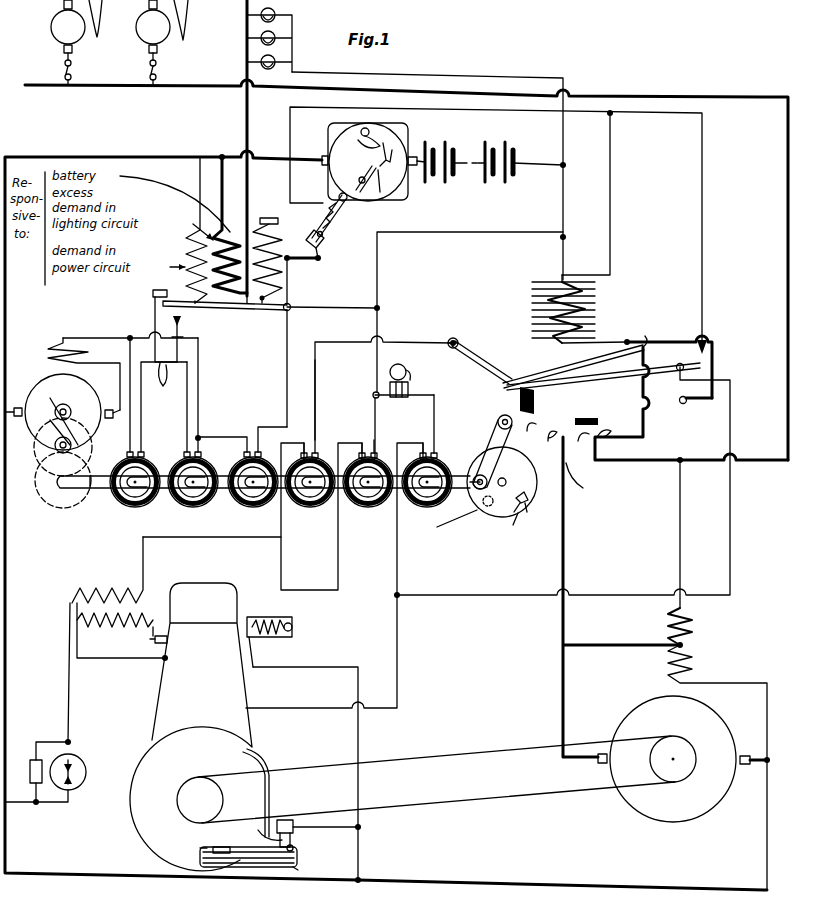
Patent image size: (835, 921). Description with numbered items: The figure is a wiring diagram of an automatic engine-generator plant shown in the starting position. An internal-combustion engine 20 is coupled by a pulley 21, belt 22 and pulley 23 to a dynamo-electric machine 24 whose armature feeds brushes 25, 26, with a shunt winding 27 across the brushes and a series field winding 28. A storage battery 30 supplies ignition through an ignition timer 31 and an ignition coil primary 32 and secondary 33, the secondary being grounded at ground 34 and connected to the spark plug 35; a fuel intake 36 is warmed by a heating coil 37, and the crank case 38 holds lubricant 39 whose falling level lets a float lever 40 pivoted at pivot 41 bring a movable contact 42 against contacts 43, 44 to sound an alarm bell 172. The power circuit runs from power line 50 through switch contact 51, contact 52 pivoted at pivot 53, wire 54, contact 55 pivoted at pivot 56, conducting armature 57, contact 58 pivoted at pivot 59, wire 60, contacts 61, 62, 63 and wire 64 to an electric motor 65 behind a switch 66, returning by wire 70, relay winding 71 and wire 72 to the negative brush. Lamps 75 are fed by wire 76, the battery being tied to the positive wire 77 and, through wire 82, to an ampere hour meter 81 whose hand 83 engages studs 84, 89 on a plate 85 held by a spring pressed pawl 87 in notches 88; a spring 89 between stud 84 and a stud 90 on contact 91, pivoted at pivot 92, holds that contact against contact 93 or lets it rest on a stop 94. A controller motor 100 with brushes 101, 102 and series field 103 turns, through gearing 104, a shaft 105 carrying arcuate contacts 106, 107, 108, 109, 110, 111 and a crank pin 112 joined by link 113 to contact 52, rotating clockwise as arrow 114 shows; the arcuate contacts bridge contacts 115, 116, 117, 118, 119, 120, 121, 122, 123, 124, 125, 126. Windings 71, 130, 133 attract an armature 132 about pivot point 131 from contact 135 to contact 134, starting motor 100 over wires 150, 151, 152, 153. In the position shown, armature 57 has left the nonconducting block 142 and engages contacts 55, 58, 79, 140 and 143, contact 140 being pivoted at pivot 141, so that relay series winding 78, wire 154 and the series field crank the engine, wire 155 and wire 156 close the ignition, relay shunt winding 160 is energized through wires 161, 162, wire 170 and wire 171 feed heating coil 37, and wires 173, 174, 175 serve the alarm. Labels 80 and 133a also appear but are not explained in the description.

The internal-combustion engine 20 is at (152, 735).
The pulley 21 is at (185, 783).
The belt 22 is at (444, 756).
The pulley 23 is at (680, 745).
The dynamo-electric machine 24 is at (652, 808).
The brush 25 is at (603, 753).
The brush 26 is at (745, 754).
The shunt winding 27 is at (690, 664).
The series field winding 28 is at (690, 617).
The storage battery 30 is at (470, 182).
The ignition timer 31 is at (78, 770).
The ignition coil primary 32 is at (72, 598).
The secondary 33 is at (76, 620).
The ground 34 is at (162, 660).
The spark plug 35 is at (168, 640).
The fuel intake 36 is at (295, 631).
The electrical heating coil 37 is at (258, 617).
The crank case 38 is at (298, 853).
The lubricant 39 is at (240, 858).
The float lever 40 is at (207, 848).
The pivot 41 is at (298, 868).
The movable contact 42 is at (283, 815).
The contact 43 is at (267, 840).
The contact 44 is at (295, 832).
The power line 50 is at (561, 695).
The switch contact 51 is at (550, 434).
The contact 52 is at (531, 428).
The pivot 53 is at (685, 404).
The wire 54 is at (715, 362).
The contact 55 is at (598, 362).
The pivot 56 is at (627, 341).
The conducting armature 57 is at (576, 380).
The contact 58 is at (646, 341).
The pivot 59 is at (647, 352).
The wire 60 is at (691, 398).
The contact 61 is at (598, 436).
The movable contact 62 is at (600, 422).
The contact 63 is at (594, 440).
The wire 64 is at (98, 88).
The electric motor 65 is at (53, 31).
The switch 66 is at (64, 70).
The wire 70 is at (227, 0).
The relay winding 71 is at (216, 232).
The wire 72 is at (23, 155).
The lamps 75 is at (276, 20).
The wire 76 is at (487, 74).
The wire 77 is at (566, 203).
The relay series winding 78 is at (532, 303).
The contact 79 is at (464, 341).
The pivot 80 is at (452, 341).
The ampere hour meter 81 is at (400, 193).
The wire 82 is at (272, 163).
The hand 83 is at (359, 178).
The stud 84 is at (363, 200).
The plate 85 is at (380, 194).
The spring pressed pawl 87 is at (393, 153).
The notches 88 is at (372, 132).
The spring 89 is at (360, 132).
The stud 90 is at (307, 242).
The contact 91 is at (325, 236).
The pivot 92 is at (342, 201).
The contact 93 is at (324, 247).
The stop 94 is at (267, 248).
The controller motor 100 is at (50, 375).
The brush 101 is at (18, 407).
The brush 102 is at (107, 409).
The series field 103 is at (80, 353).
The gearing 104 is at (38, 450).
The shaft 105 is at (67, 481).
The arcuate contact 106 is at (122, 508).
The arcuate contact 107 is at (191, 507).
The arcuate contact 108 is at (262, 465).
The arcuate contact 109 is at (300, 508).
The arcuate contact 110 is at (360, 510).
The arcuate contact 111 is at (443, 463).
The crank pin 112 is at (491, 430).
The link 113 is at (493, 414).
The arrow 114 is at (522, 506).
The contact 115 is at (127, 453).
The contact 116 is at (162, 409).
The contact 117 is at (176, 410).
The contact 118 is at (213, 447).
The contact 119 is at (228, 447).
The contact 120 is at (288, 428).
The contact 121 is at (298, 451).
The contact 122 is at (382, 397).
The contact 123 is at (357, 451).
The contact 124 is at (389, 445).
The contact 125 is at (414, 453).
The contact 126 is at (440, 452).
The magnet winding 130 is at (200, 306).
The pivot point 131 is at (280, 311).
The armature 132 is at (232, 309).
The electro-magnet winding 133 is at (266, 298).
The contact bar 133a is at (302, 262).
The contact 134 is at (150, 295).
The contact 135 is at (172, 322).
The contact 140 is at (468, 356).
The pivot 141 is at (449, 344).
The nonconducting block 142 is at (543, 400).
The contact 143 is at (742, 334).
The wire 150 is at (328, 310).
The wire 151 is at (455, 235).
The wire 152 is at (200, 355).
The wire 153 is at (161, 387).
The wire 154 is at (682, 505).
The wire 155 is at (317, 360).
The wire 156 is at (212, 538).
The relay shunt winding 160 is at (532, 281).
The wire 161 is at (612, 180).
The wire 162 is at (487, 114).
The wire 170 is at (325, 592).
The wire 171 is at (331, 668).
The alarm bell 172 is at (398, 398).
The wire 173 is at (360, 830).
The wire 174 is at (396, 563).
The wire 175 is at (731, 426).